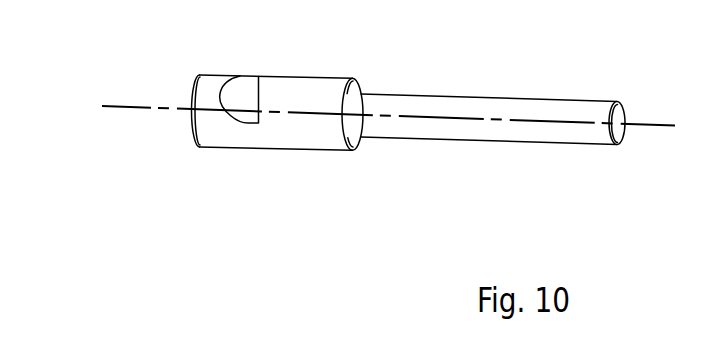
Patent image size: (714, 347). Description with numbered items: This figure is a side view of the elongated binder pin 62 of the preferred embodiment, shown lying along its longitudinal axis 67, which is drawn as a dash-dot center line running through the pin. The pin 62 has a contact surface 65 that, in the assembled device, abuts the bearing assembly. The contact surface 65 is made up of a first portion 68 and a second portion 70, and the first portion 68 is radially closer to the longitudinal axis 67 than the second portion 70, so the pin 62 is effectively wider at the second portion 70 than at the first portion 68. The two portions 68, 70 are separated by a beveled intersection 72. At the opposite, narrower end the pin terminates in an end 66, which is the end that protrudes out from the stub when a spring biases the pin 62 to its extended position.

The binder pin 62 is at (492, 108).
The contact surface 65 is at (292, 125).
The end of pin 66 is at (618, 113).
The longitudinal axis 67 is at (127, 107).
The first portion 68 is at (323, 87).
The second portion 70 is at (213, 77).
The beveled intersection 72 is at (247, 87).